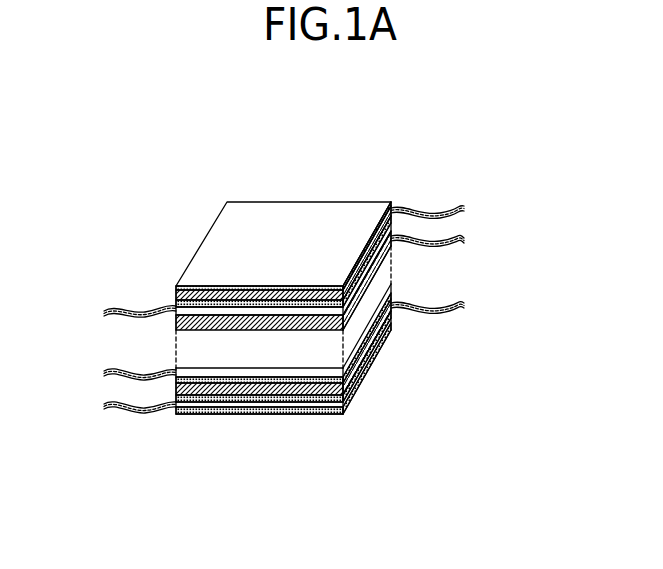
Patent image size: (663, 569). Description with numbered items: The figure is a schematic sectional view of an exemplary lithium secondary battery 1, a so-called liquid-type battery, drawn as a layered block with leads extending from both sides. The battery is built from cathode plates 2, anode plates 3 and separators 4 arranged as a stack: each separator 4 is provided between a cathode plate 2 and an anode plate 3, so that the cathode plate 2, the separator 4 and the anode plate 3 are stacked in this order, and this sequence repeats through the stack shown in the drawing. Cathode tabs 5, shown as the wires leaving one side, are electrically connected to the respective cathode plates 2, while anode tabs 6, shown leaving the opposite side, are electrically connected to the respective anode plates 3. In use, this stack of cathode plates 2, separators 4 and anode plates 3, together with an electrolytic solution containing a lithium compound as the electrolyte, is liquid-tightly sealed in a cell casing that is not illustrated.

The lithium secondary battery 1 is at (243, 193).
The cathode plate 2 is at (177, 297).
The anode plate 3 is at (243, 402).
The separator 4 is at (338, 395).
The cathode tab 5 is at (463, 243).
The anode tab 6 is at (113, 307).